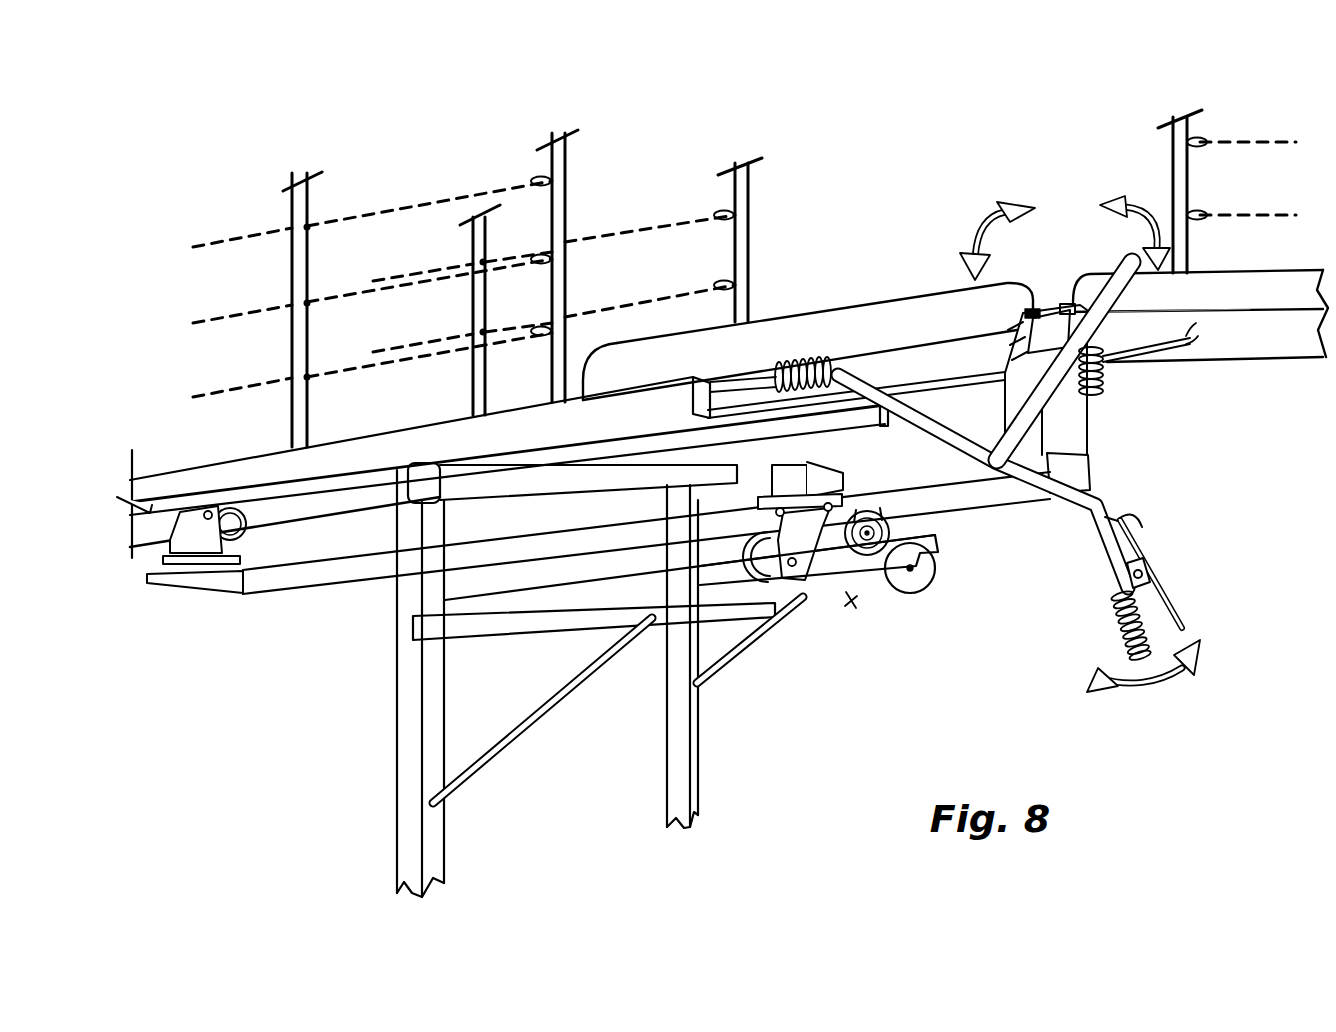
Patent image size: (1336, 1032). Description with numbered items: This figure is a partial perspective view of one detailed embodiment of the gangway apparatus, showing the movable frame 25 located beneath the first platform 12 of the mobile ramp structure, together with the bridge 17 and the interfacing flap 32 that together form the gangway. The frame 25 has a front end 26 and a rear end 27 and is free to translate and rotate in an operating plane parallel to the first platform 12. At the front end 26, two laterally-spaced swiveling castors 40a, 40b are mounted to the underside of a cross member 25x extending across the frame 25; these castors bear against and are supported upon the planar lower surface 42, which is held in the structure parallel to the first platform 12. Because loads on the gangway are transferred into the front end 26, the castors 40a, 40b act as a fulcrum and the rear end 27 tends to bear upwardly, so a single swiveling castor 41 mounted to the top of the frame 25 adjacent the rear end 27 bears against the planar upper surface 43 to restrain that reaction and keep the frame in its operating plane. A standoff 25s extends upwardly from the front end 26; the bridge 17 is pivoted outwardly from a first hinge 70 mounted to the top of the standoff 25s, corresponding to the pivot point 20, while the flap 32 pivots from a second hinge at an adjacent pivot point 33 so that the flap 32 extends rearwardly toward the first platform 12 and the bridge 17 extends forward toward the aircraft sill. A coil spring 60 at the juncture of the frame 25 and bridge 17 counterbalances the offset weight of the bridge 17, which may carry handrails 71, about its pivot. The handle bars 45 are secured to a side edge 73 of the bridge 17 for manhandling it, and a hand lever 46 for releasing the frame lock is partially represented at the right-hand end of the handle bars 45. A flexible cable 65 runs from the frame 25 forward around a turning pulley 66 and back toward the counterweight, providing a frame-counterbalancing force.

The first platform 12 is at (380, 447).
The bridge 17 is at (1250, 335).
The pivot point 20 is at (1122, 231).
The frame 25 is at (597, 537).
The standoff 25s is at (1067, 412).
The cross member 25x is at (827, 480).
The front end 26 is at (1062, 435).
The rear end 27 is at (240, 585).
The interfacing flap 32 is at (848, 318).
The pivot point 33 is at (1038, 312).
The swiveling castor 40a is at (797, 533).
The swiveling castor 40b is at (907, 527).
The swiveling castor 41 is at (203, 545).
The lower surface 42 is at (697, 617).
The upper surface 43 is at (277, 493).
The handle bars 45 is at (1087, 520).
The hand lever 46 is at (1160, 602).
The spring 60 is at (1138, 348).
The cable 65 is at (857, 600).
The pulley 66 is at (917, 580).
The first hinge 70 is at (1065, 305).
The handrails 71 is at (1190, 175).
The side edge 73 is at (1192, 306).